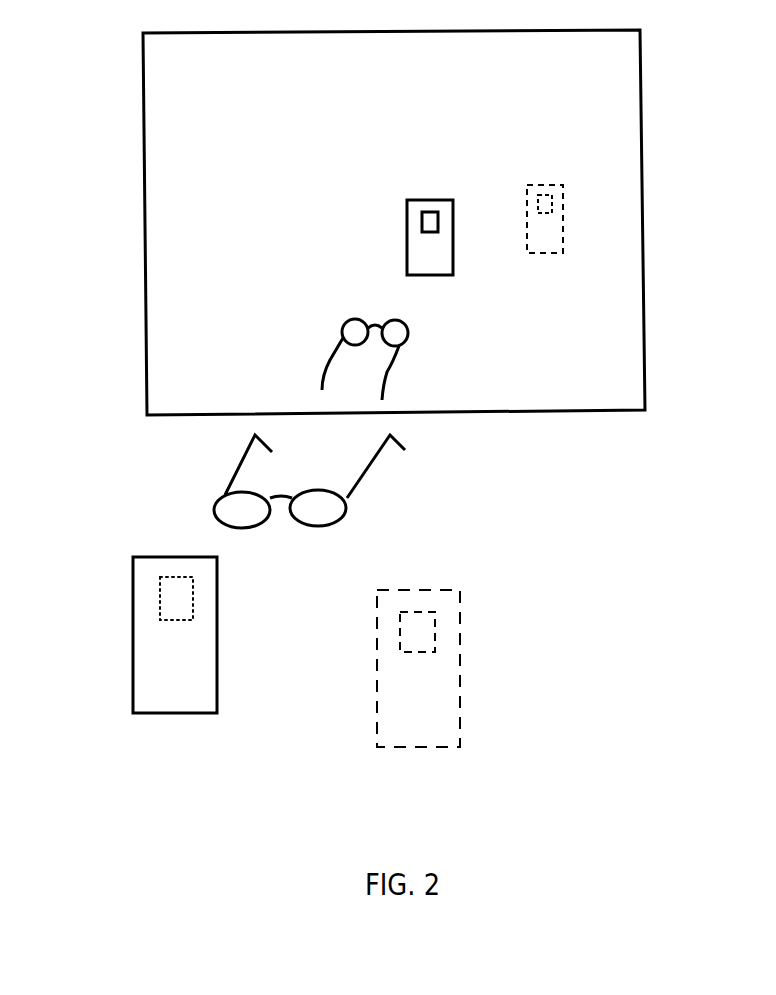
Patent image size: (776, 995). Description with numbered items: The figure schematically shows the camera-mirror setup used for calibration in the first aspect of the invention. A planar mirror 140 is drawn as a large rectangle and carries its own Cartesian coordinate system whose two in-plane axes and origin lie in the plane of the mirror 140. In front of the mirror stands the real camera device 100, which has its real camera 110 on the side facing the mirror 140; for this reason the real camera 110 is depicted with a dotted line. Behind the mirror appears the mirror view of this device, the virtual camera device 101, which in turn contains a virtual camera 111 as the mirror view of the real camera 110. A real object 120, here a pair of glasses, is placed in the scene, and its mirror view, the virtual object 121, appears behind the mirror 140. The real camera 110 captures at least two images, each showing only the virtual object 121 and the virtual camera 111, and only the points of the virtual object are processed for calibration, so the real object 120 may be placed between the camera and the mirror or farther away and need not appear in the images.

The real camera device 100 is at (220, 678).
The virtual camera device 101 is at (423, 200).
The real camera 110 is at (162, 600).
The virtual camera 111 is at (438, 220).
The real object 120 is at (360, 492).
The virtual object 121 is at (400, 362).
The planar mirror 140 is at (645, 360).